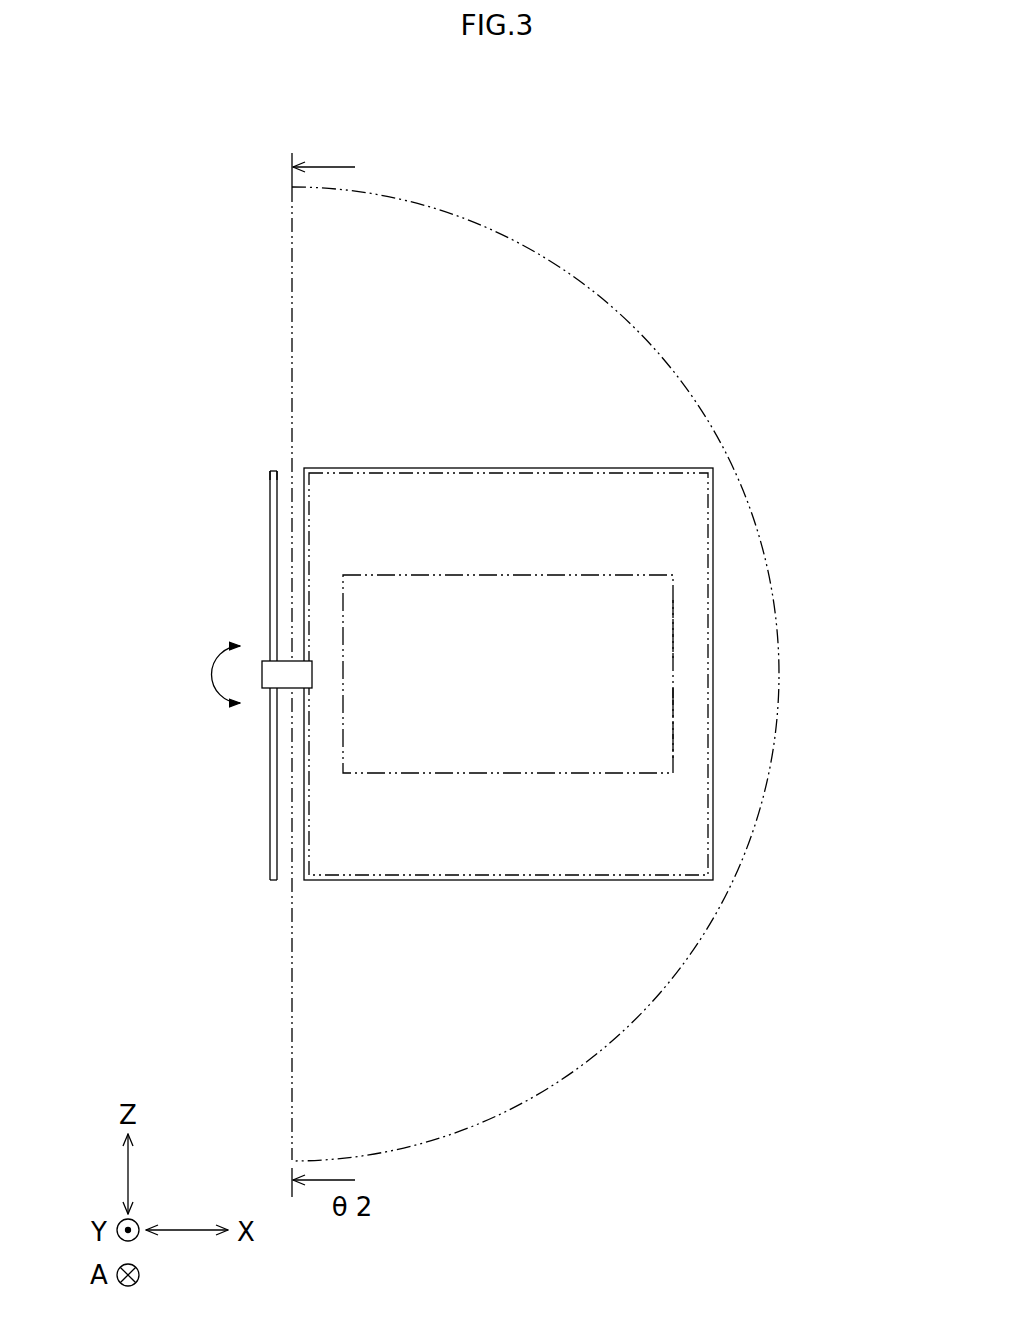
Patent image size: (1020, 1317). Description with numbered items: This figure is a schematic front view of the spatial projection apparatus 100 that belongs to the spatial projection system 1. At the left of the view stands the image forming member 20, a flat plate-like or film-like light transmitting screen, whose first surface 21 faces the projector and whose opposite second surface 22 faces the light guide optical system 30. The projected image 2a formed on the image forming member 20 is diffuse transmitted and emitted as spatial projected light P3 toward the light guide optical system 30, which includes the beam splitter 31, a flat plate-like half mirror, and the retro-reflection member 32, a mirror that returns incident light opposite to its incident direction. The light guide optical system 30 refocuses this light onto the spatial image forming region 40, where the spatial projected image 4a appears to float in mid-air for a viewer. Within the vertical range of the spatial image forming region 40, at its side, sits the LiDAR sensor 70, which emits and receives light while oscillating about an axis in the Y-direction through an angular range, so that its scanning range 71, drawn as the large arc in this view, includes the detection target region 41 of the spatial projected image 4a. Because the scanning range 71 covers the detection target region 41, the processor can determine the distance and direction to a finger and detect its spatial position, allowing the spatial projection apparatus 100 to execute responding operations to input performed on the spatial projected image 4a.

The spatial projection system 1 is at (207, 181).
The spatial projection apparatus 100 is at (210, 246).
The scanning range 71 is at (487, 222).
The light guide optical system 30 is at (557, 579).
The beam splitter 31 is at (672, 468).
The retro-reflection member 32 is at (601, 467).
The spatial image forming region 40 is at (710, 557).
The spatial projected image 4a is at (675, 652).
The spatial projected light P3 is at (675, 693).
The detection target region 41 is at (675, 718).
The image forming member 20 is at (226, 621).
The first surface 21 is at (270, 602).
The second surface 22 is at (277, 468).
The projected image 2a is at (269, 557).
The LiDAR sensor 70 is at (264, 688).